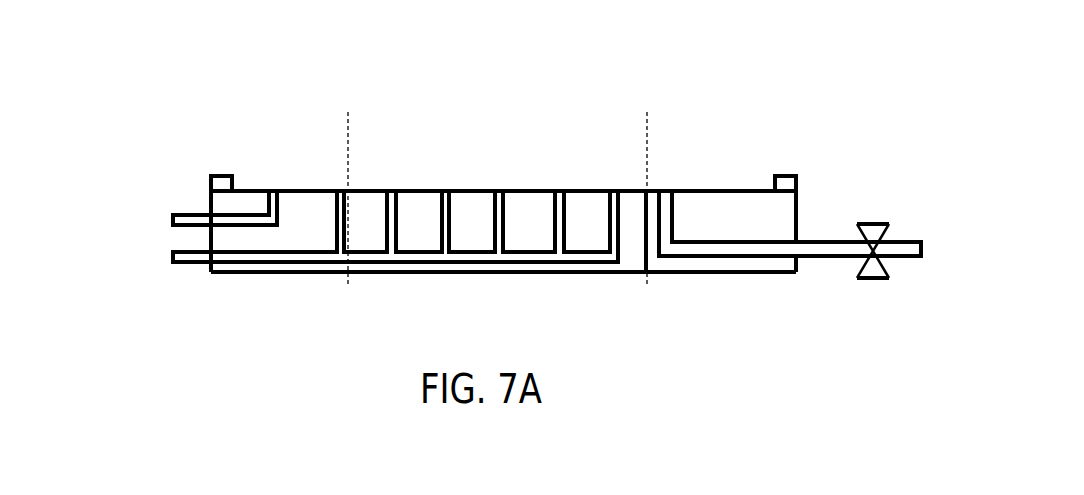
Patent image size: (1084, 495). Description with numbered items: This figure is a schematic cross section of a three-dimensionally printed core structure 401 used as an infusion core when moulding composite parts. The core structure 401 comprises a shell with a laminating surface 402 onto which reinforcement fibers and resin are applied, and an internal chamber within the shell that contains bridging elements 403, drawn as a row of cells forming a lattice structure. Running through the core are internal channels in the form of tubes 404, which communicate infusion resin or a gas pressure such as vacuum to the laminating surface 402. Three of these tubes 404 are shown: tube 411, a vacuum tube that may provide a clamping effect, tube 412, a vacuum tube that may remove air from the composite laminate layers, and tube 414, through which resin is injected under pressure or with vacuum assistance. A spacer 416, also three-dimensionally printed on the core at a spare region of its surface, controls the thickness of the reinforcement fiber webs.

The 3D printed core structure 401 is at (170, 235).
The laminating surface 402 is at (582, 187).
The bridging elements 403 is at (468, 212).
The tubes 404 is at (563, 240).
The tube 411 is at (187, 218).
The tube 412 is at (198, 260).
The tube 414 is at (840, 252).
The spacer 416 is at (785, 177).